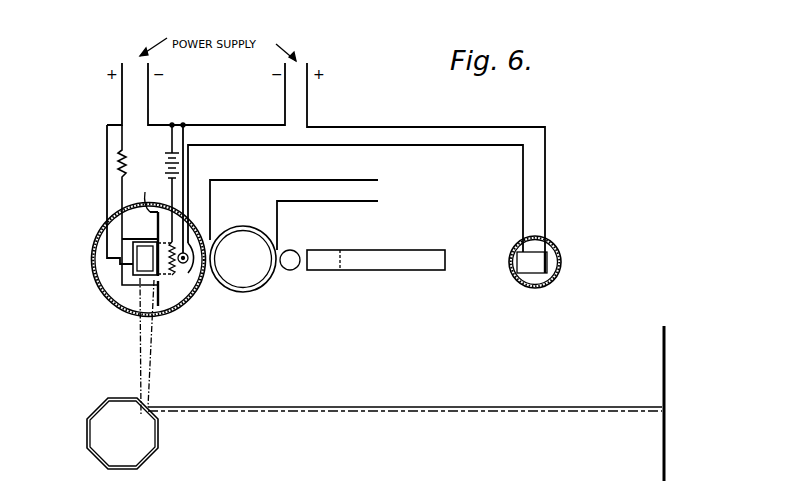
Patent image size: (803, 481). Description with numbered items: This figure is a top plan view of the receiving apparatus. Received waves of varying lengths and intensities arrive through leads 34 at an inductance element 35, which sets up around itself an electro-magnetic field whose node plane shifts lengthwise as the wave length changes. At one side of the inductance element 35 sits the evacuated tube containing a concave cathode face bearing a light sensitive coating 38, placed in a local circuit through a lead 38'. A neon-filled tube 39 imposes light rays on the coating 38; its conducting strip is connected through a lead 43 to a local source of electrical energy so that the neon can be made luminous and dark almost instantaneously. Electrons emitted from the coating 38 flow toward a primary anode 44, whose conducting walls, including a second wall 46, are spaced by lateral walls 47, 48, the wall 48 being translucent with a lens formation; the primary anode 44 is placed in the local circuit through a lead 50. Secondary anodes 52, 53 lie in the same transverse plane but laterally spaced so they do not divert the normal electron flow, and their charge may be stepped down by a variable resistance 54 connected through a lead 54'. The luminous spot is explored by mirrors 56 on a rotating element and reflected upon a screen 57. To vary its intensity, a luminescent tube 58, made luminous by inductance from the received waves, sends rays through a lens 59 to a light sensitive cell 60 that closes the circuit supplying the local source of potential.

The leads 34 is at (322, 175).
The inductance element 35 is at (258, 291).
The light sensitive coating 38 is at (211, 231).
The lead 38' is at (355, 198).
The tube 39 is at (189, 275).
The lead 43 is at (184, 130).
The primary anode 44 is at (133, 266).
The second wall 46 is at (146, 262).
The lateral wall 47 is at (132, 247).
The lateral wall 48 is at (139, 280).
The lead 50 is at (106, 201).
The secondary anode 52 is at (146, 225).
The secondary anode 53 is at (161, 296).
The variable resistance 54 is at (98, 182).
The lead 54' is at (110, 245).
The mirrors 56 is at (106, 402).
The screen 57 is at (668, 358).
The luminescent tube 58 is at (291, 270).
The lens 59 is at (407, 259).
The light sensitive cell 60 is at (562, 262).